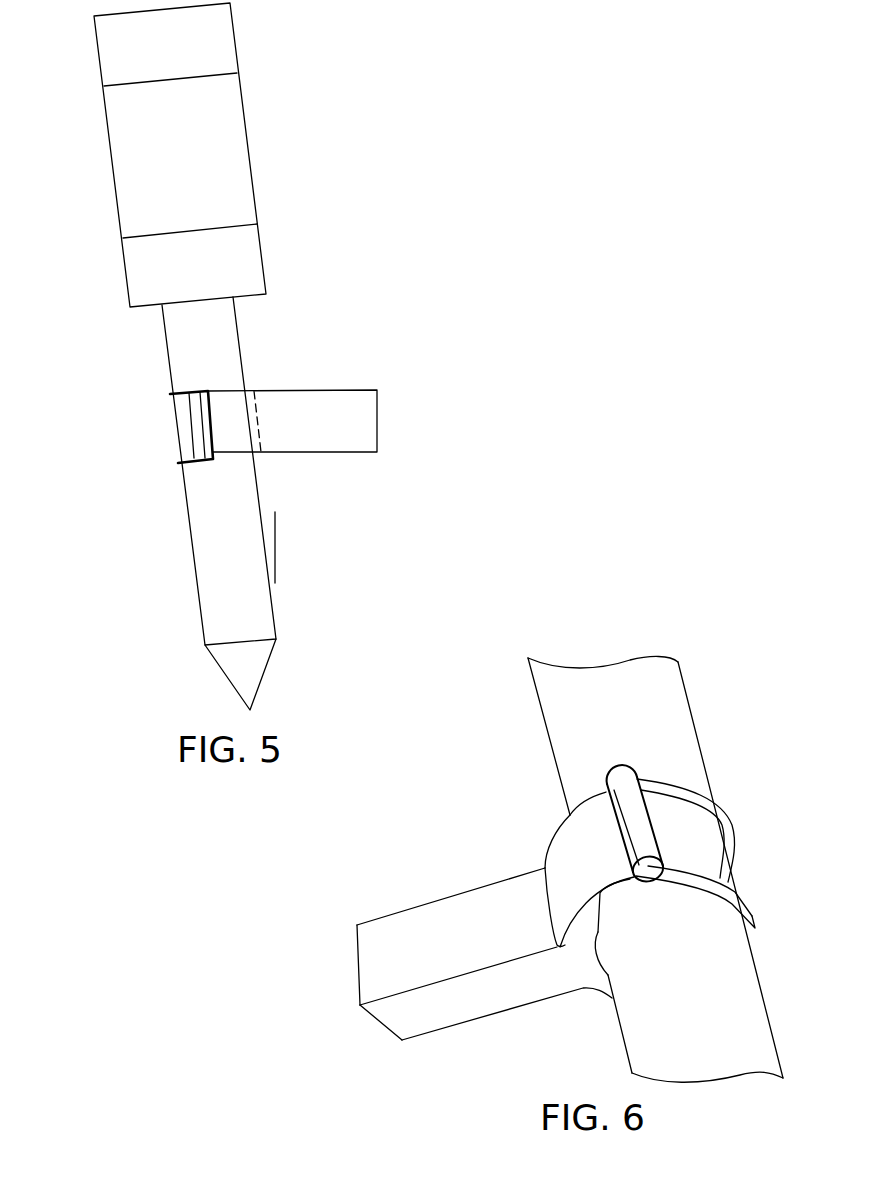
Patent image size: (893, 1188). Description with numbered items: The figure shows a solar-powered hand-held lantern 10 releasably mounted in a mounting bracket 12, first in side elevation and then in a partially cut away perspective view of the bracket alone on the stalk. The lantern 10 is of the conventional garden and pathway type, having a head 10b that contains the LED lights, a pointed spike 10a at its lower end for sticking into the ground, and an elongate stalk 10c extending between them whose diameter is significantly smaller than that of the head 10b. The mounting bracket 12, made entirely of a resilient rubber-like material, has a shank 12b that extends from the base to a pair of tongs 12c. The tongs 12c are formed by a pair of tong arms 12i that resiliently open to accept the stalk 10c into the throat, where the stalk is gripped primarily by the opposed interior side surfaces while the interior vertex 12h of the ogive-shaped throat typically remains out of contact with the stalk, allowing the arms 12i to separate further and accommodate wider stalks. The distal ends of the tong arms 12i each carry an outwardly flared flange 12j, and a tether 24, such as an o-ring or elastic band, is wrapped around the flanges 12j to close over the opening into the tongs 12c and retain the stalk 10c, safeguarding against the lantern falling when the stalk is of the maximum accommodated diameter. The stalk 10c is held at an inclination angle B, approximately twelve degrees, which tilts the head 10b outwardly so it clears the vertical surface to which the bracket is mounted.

In FIG. 5, the lantern 10 is at (319, 78).
In FIG. 5, the spike 10a is at (227, 678).
In FIG. 5, the head 10b is at (83, 193).
In FIG. 5, the stalk 10c is at (167, 349).
In FIG. 6, the stalk 10c is at (543, 727).
In FIG. 5, the mounting bracket 12 is at (315, 367).
In FIG. 5, the shank 12b is at (347, 452).
In FIG. 6, the shank 12b is at (460, 1023).
In FIG. 5, the tongs 12c is at (255, 377).
In FIG. 6, the tongs 12c is at (595, 1015).
In FIG. 6, the interior vertex 12h is at (602, 948).
In FIG. 5, the tong arms 12i is at (235, 438).
In FIG. 6, the tong arms 12i is at (567, 848).
In FIG. 5, the outwardly flared flange 12j is at (190, 432).
In FIG. 6, the outwardly flared flange 12j is at (625, 775).
In FIG. 5, the tether 24 is at (181, 388).
In FIG. 6, the tether 24 is at (703, 885).
In FIG. 5, the stalk inclination angle B is at (312, 530).